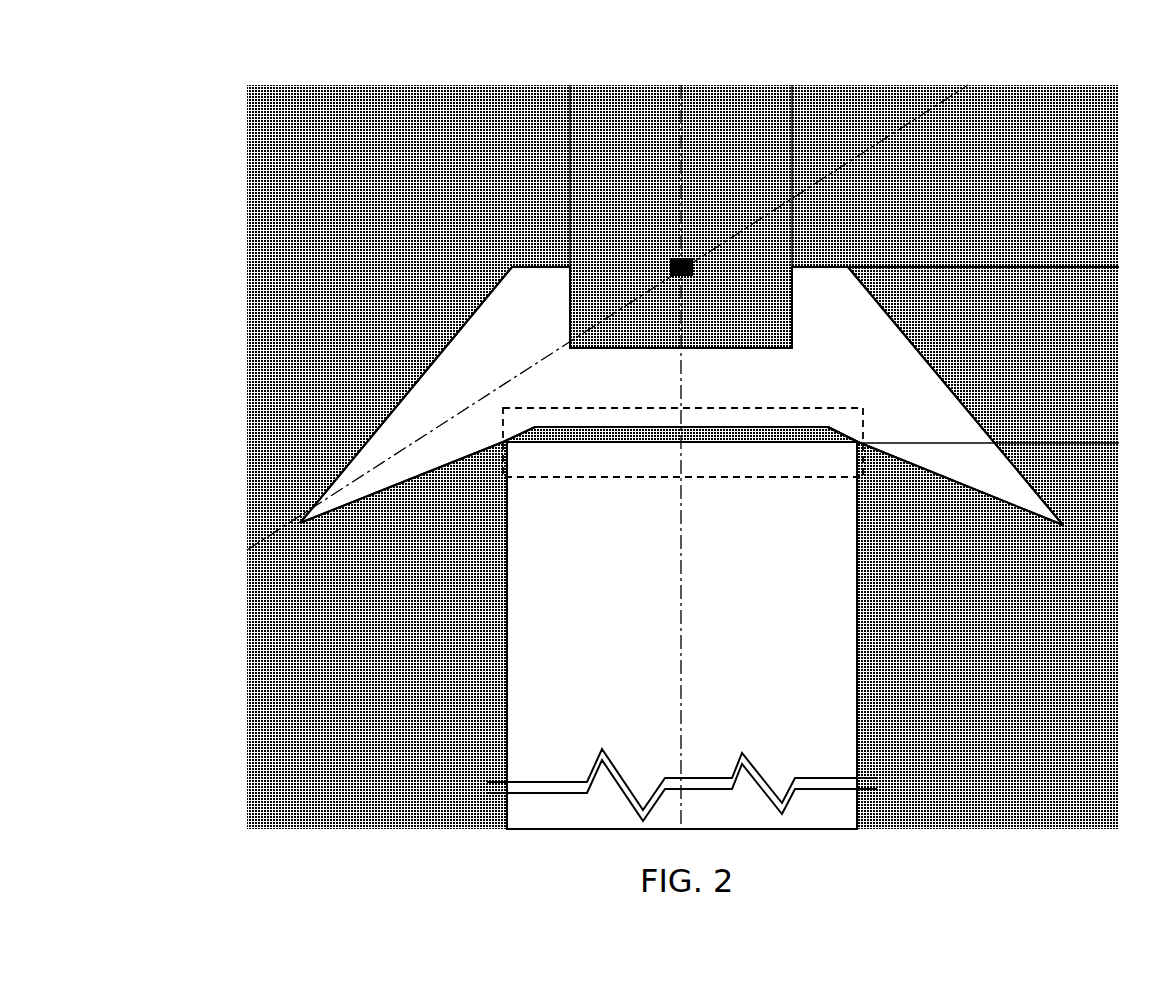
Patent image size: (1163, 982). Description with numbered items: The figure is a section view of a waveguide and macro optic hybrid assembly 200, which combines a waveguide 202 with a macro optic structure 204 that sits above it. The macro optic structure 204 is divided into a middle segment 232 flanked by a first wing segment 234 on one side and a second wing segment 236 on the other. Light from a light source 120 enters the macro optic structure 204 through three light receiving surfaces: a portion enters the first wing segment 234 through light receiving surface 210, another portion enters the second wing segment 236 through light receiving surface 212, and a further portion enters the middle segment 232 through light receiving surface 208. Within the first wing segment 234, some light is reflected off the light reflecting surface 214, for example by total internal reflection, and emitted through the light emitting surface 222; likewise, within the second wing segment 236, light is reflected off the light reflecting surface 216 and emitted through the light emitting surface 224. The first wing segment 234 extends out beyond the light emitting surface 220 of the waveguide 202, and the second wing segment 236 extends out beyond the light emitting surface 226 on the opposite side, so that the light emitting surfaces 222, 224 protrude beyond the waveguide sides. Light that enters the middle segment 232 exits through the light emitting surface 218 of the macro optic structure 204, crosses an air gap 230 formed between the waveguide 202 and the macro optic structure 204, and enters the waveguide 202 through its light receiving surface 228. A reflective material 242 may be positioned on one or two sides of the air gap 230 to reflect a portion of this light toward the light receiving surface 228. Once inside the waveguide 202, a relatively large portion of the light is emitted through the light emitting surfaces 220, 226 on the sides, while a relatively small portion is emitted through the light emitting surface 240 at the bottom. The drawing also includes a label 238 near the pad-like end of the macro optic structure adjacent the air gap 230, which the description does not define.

The waveguide and macro optic hybrid assembly 200 is at (1057, 108).
The light source 120 is at (684, 256).
The waveguide 202 is at (477, 777).
The macro optic structure 204 is at (448, 287).
The light receiving surface 208 is at (718, 347).
The light receiving surface 210 is at (568, 292).
The light receiving surface 212 is at (797, 290).
The light reflecting surface 214 is at (382, 417).
The light reflecting surface 216 is at (928, 357).
The light emitting surface 218 is at (578, 429).
The light emitting surface 220 is at (505, 721).
The light emitting surface 222 is at (368, 497).
The light emitting surface 224 is at (995, 500).
The light emitting surface 226 is at (859, 738).
The light receiving surface 228 is at (765, 444).
The air gap 230 is at (648, 434).
The middle segment 232 is at (667, 378).
The first wing segment 234 is at (444, 386).
The second wing segment 236 is at (964, 413).
The pad sloped end 238 is at (853, 447).
The light emitting surface 240 is at (794, 827).
The reflective material 242 is at (503, 466).